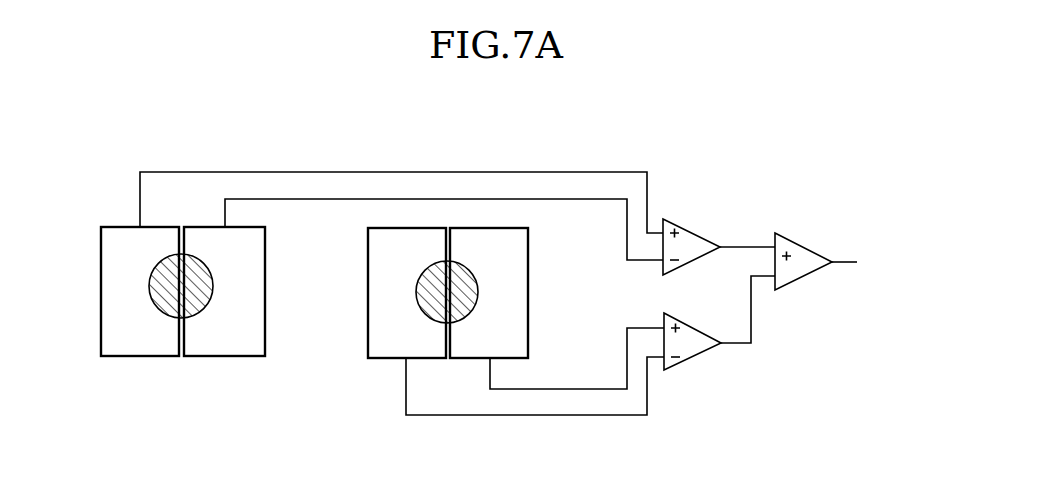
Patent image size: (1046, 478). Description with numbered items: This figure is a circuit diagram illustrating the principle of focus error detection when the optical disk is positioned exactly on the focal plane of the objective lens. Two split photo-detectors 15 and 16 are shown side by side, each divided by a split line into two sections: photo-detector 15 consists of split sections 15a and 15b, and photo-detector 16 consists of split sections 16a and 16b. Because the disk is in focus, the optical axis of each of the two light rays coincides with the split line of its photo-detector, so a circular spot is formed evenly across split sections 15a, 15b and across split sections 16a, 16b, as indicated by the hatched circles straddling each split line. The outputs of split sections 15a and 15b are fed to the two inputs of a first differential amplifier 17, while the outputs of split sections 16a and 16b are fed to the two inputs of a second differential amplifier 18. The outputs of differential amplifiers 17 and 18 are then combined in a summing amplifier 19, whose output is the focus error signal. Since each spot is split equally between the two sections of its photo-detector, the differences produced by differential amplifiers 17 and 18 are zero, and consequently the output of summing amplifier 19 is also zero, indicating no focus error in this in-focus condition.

The photo-detector 15 is at (358, 297).
The split section 15a is at (107, 225).
The split section 15b is at (267, 270).
The photo-detector 16 is at (477, 327).
The split section 16a is at (367, 303).
The split section 16b is at (530, 302).
The differential amplifier 17 is at (698, 233).
The differential amplifier 18 is at (700, 355).
The summing amplifier 19 is at (808, 275).